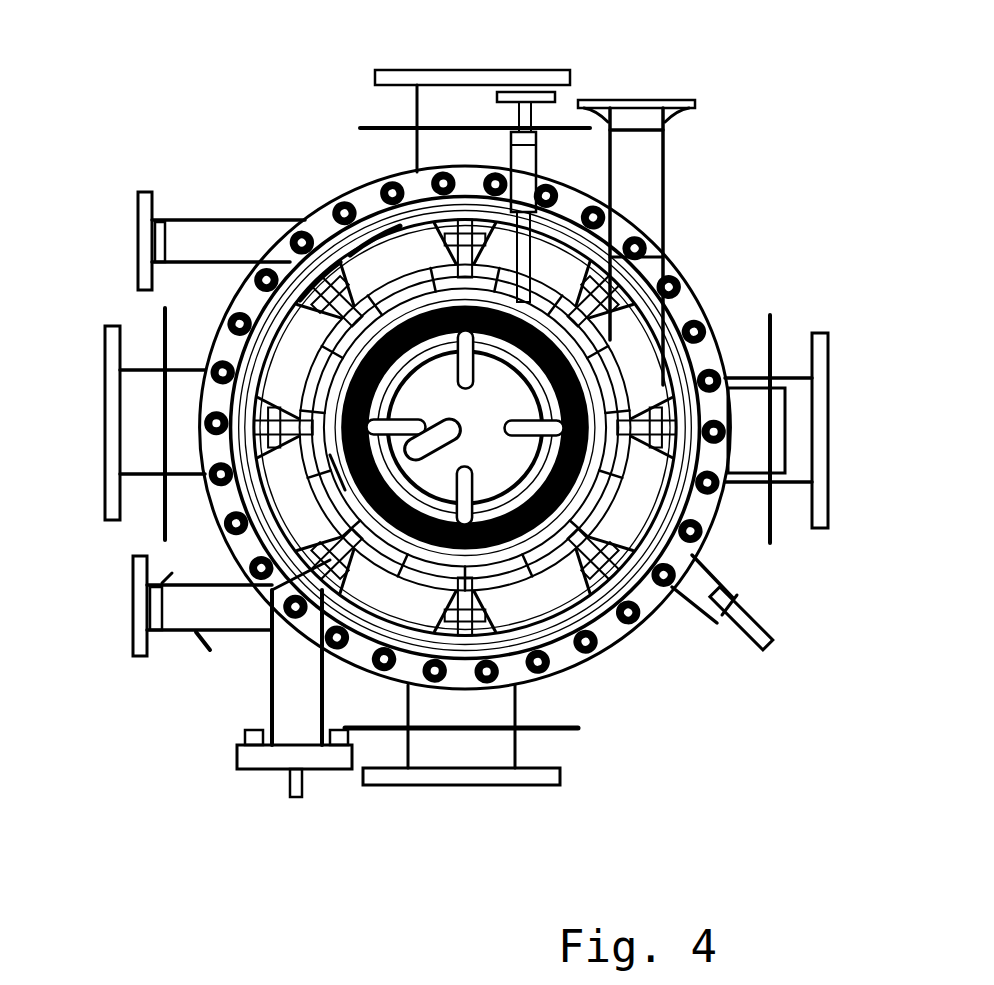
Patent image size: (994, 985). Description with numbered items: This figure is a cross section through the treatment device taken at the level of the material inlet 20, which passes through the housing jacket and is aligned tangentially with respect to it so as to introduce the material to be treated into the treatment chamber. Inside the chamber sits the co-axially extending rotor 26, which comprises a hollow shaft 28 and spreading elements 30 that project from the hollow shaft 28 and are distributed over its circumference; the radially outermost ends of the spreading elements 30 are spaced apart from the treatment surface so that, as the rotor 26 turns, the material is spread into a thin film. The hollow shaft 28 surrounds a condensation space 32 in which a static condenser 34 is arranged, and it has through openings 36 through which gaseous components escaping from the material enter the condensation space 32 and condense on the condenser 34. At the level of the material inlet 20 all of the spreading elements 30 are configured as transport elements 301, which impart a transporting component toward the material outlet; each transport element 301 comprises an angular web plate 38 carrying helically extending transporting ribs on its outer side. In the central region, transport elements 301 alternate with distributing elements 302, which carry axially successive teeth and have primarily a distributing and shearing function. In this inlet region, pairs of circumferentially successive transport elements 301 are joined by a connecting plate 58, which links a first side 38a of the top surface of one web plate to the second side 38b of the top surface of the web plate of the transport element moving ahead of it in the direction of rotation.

The material inlet 20 is at (633, 217).
The rotor 26 is at (585, 365).
The hollow shaft 28 is at (615, 625).
The spreading elements 30 is at (597, 408).
The transport elements 301 is at (600, 340).
The distributing element 302 is at (660, 360).
The condensation space 32 is at (435, 520).
The static condenser 34 is at (350, 470).
The through openings 36 is at (385, 462).
The angular web plate 38 is at (692, 553).
The first side of the top surface of the web plate 38a is at (335, 255).
The second side of the top surface of the web plate 38b is at (360, 230).
The connecting plate 58 is at (350, 275).